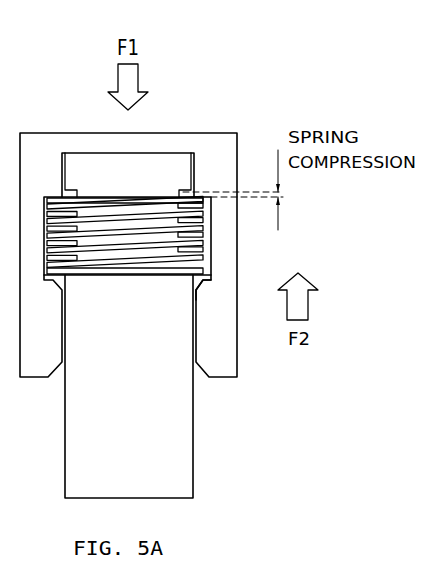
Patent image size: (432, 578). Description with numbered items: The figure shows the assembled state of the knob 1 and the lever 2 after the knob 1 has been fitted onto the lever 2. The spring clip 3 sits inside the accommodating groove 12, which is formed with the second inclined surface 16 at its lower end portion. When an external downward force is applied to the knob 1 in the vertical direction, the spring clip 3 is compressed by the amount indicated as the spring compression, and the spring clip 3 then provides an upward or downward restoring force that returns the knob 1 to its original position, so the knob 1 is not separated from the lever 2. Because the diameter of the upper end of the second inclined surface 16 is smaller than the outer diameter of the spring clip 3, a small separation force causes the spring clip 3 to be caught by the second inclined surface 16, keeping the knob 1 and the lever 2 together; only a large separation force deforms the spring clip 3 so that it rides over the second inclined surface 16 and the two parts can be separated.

The knob 1 is at (206, 137).
The lever 2 is at (192, 408).
The spring clip 3 is at (211, 235).
The accommodating groove 12 is at (213, 259).
The second inclined surface 16 is at (197, 287).